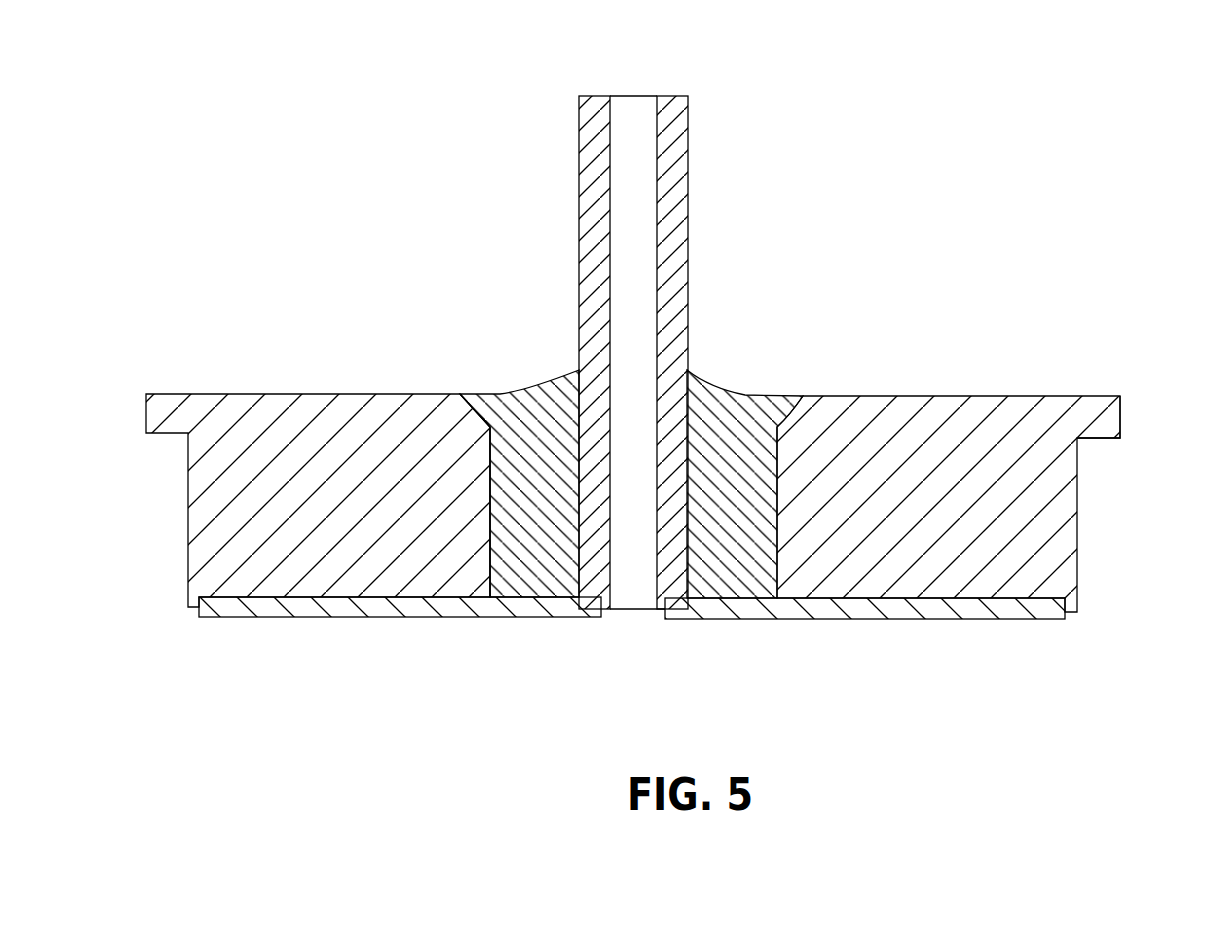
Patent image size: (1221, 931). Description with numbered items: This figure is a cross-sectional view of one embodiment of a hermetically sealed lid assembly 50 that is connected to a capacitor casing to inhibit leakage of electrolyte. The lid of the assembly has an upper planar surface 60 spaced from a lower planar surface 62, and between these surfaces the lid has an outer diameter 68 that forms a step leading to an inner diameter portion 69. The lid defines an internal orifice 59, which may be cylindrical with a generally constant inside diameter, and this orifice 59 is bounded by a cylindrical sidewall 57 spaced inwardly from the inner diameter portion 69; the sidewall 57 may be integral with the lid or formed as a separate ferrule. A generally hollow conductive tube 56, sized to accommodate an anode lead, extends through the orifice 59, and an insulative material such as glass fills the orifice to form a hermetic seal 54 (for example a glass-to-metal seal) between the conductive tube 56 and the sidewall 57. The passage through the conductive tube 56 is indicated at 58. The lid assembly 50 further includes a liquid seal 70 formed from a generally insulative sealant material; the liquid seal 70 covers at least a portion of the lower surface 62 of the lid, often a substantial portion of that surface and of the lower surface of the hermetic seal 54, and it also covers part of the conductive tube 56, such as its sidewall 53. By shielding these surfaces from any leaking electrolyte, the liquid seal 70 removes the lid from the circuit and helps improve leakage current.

The lid assembly 50 is at (905, 160).
The sidewall 53 is at (592, 575).
The hermetic seal 54 is at (527, 390).
The conductive tube 56 is at (682, 404).
The sidewall 57 is at (497, 575).
The tube bore 58 is at (626, 85).
The internal orifice 59 is at (775, 560).
The upper planar surface 60 is at (255, 376).
The lower planar surface 62 is at (278, 597).
The outer diameter 68 is at (1120, 410).
The inner diameter portion 69 is at (1077, 515).
The liquid seal 70 is at (970, 619).